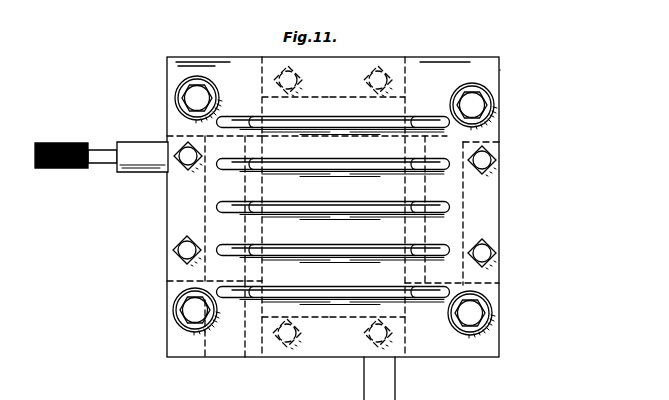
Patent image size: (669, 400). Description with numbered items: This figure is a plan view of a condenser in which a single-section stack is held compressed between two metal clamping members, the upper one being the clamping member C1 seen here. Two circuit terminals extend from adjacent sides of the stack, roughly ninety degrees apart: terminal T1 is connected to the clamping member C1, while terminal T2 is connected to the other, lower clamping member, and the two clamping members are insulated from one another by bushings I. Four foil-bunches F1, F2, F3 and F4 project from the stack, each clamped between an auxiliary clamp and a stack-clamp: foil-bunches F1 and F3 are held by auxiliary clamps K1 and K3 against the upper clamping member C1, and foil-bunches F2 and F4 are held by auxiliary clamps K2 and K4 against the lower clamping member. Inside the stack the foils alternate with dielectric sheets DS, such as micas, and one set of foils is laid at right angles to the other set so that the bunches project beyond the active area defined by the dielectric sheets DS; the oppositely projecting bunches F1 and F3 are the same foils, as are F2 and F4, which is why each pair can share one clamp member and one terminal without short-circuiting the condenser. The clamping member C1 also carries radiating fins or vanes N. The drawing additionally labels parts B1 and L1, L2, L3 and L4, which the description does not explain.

The bushings I is at (186, 87).
The bolt head B1 is at (197, 98).
The metal clamping member C1 is at (172, 98).
The circuit terminal T1 is at (128, 145).
The nut L1 is at (186, 157).
The foil-bunch F1 is at (215, 197).
The auxiliary clamp K1 is at (183, 281).
The radiating fins or vanes N is at (230, 118).
The foil-bunch F2 is at (260, 103).
The nut L2 is at (285, 70).
The auxiliary clamp K2 is at (315, 99).
The foil-bunch F3 is at (450, 138).
The nut L3 is at (484, 160).
The auxiliary clamp K3 is at (464, 203).
The dielectric sheets DS is at (428, 237).
The circuit terminal T2 is at (386, 374).
The nut L4 is at (288, 342).
The auxiliary clamp K4 is at (328, 320).
The foil-bunch F4 is at (262, 305).